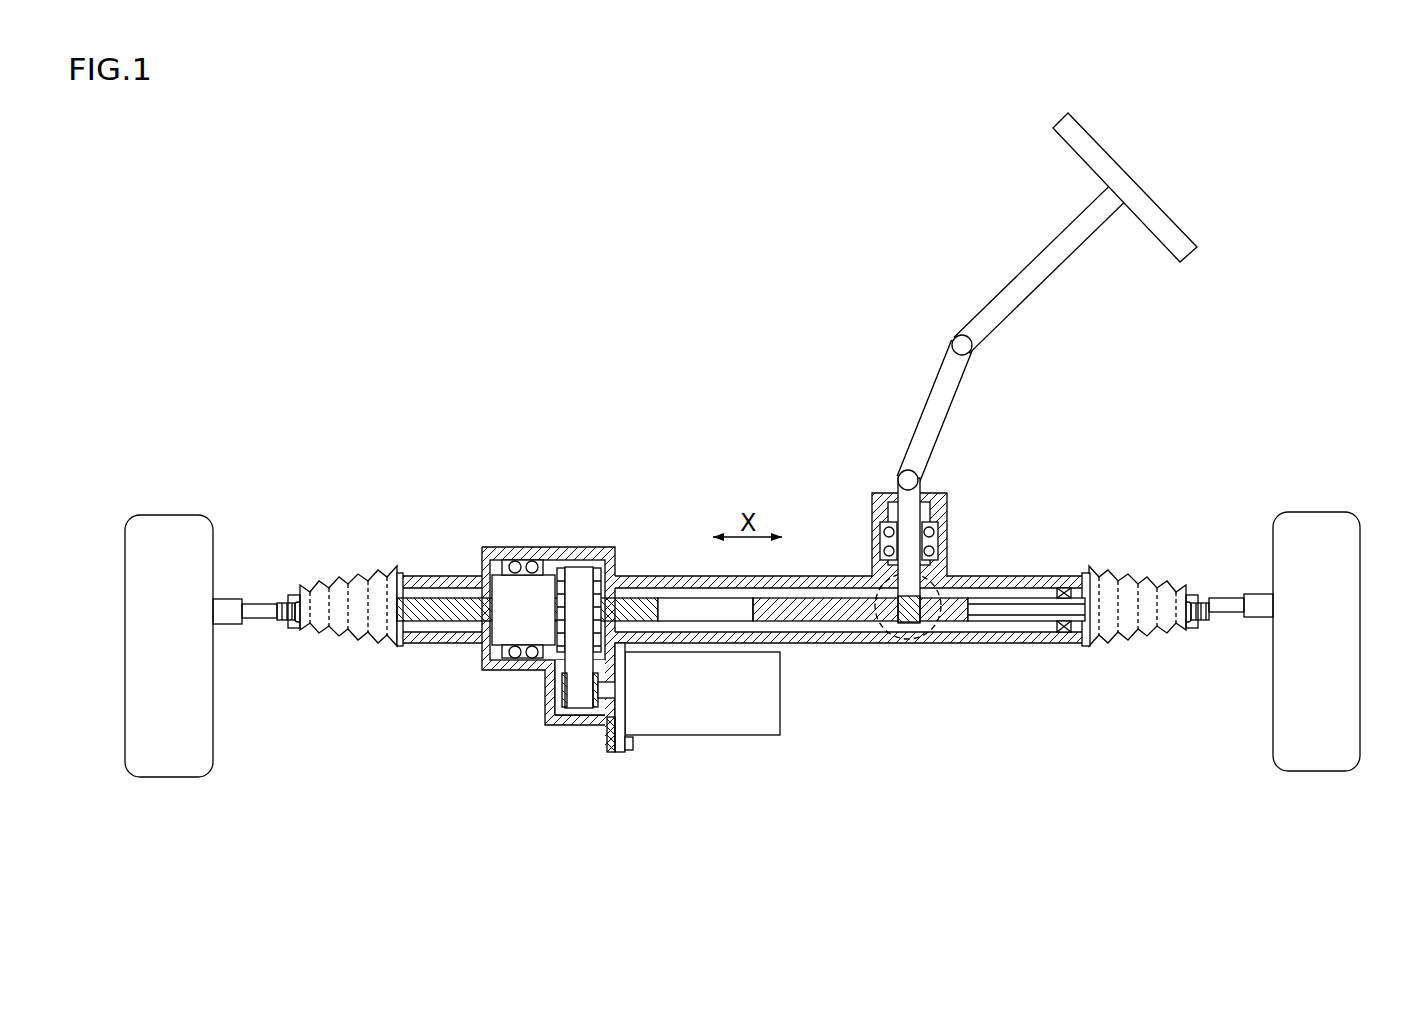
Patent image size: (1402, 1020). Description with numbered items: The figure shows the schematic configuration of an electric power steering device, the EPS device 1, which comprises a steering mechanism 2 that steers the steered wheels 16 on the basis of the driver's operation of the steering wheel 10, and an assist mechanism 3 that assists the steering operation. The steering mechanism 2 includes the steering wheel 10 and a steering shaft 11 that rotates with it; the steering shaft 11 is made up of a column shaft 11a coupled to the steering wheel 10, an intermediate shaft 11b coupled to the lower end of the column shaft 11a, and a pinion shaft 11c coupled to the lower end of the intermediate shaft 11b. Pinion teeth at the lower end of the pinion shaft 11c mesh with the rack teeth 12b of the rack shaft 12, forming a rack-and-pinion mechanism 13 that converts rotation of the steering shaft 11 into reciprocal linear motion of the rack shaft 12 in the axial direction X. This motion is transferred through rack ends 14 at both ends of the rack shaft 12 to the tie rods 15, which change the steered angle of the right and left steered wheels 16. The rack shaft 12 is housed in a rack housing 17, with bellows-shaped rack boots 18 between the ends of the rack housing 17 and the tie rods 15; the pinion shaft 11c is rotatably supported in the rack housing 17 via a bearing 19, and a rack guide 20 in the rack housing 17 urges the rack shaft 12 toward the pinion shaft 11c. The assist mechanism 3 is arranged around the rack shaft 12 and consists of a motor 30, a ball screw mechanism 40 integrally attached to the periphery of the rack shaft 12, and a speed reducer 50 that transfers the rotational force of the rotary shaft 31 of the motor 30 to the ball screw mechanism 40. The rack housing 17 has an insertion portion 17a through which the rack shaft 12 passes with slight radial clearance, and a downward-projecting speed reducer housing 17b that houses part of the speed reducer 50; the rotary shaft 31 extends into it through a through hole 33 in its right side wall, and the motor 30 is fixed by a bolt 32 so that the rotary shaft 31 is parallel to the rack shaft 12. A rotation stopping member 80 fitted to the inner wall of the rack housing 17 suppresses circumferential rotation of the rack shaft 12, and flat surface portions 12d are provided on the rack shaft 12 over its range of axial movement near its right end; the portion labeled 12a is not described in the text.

The EPS device 1 is at (748, 250).
The steering mechanism 2 is at (1147, 325).
The assist mechanism 3 is at (628, 543).
The steering wheel 10 is at (1102, 137).
The steering shaft 11 is at (975, 403).
The column shaft 11a is at (975, 308).
The intermediate shaft 11b is at (925, 398).
The pinion shaft 11c is at (880, 512).
The rack shaft 12 is at (741, 594).
The ball screw portion 12a is at (452, 598).
The rack teeth 12b is at (1000, 583).
The flat surface portions 12d is at (1053, 582).
The rack-and-pinion mechanism 13 is at (918, 645).
The rack ends 14 is at (353, 632).
The tie rods 15 is at (282, 622).
The steered wheels 16 is at (168, 512).
The rack housing 17 is at (790, 574).
The insertion portion 17a is at (433, 582).
The speed reducer housing 17b is at (545, 724).
The rack boots 18 is at (362, 567).
The bearing 19 is at (943, 512).
The rack guide 20 is at (880, 632).
The motor 30 is at (668, 684).
The rotary shaft 31 is at (615, 703).
The bolt 32 is at (637, 745).
The through hole 33 is at (613, 673).
The ball screw mechanism 40 is at (481, 643).
The speed reducer 50 is at (547, 670).
The rotation stopping member 80 is at (1070, 637).